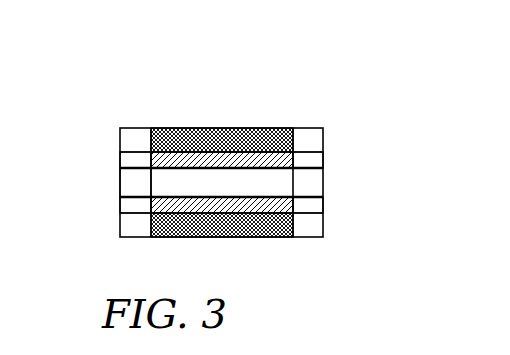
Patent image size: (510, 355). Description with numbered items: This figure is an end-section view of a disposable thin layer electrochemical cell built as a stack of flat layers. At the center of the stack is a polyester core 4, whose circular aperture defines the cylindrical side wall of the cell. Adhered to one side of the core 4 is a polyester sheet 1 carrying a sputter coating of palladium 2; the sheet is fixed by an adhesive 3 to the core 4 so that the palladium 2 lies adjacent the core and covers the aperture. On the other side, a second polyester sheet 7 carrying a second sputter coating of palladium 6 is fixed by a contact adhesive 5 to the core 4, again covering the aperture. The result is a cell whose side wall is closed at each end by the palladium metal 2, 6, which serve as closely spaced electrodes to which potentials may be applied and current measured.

The polyester sheet 1 is at (225, 128).
The sputter coating of palladium 2 is at (120, 160).
The adhesive 3 is at (323, 170).
The polyester core 4 is at (120, 182).
The contact adhesive 5 is at (323, 200).
The second sputter coating of palladium 6 is at (120, 207).
The second polyester sheet 7 is at (227, 237).